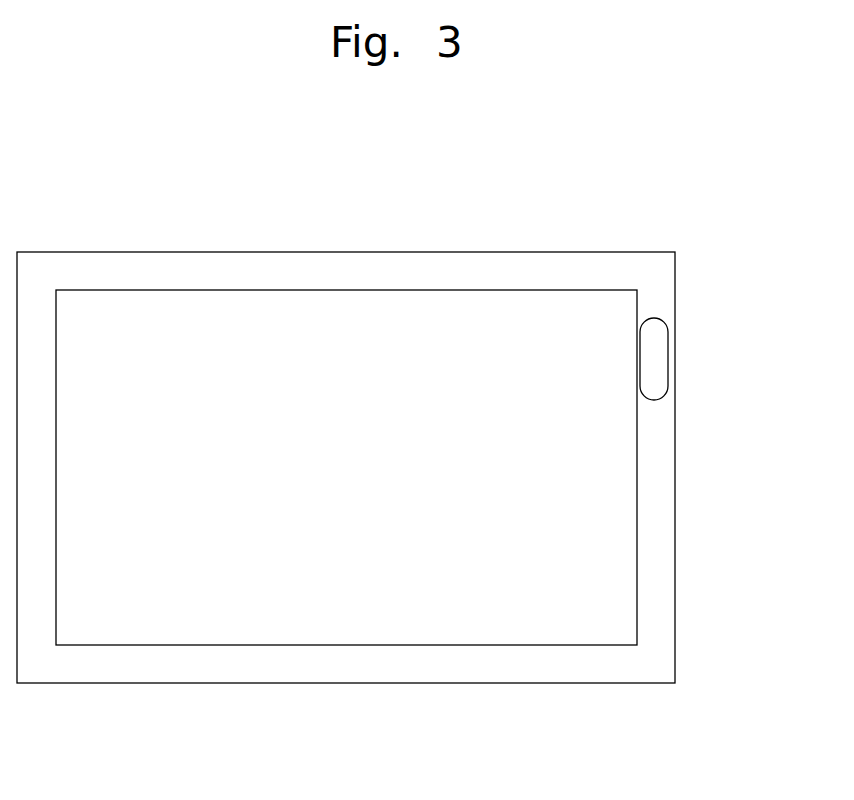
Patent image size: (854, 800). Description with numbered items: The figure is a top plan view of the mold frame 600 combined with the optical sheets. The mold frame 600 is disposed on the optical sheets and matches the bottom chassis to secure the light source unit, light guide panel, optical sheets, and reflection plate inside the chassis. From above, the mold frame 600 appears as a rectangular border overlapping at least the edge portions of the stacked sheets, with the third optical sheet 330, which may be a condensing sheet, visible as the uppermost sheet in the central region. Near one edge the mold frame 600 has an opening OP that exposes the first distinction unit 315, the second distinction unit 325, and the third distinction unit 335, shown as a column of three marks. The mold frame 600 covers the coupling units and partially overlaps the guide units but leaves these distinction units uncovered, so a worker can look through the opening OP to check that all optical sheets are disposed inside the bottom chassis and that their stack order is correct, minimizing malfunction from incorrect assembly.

The mold frame 600 is at (500, 258).
The third optical sheet 330 is at (354, 338).
The opening OP is at (653, 317).
The first distinction unit 315 is at (662, 333).
The second distinction unit 325 is at (662, 359).
The third distinction unit 335 is at (662, 385).